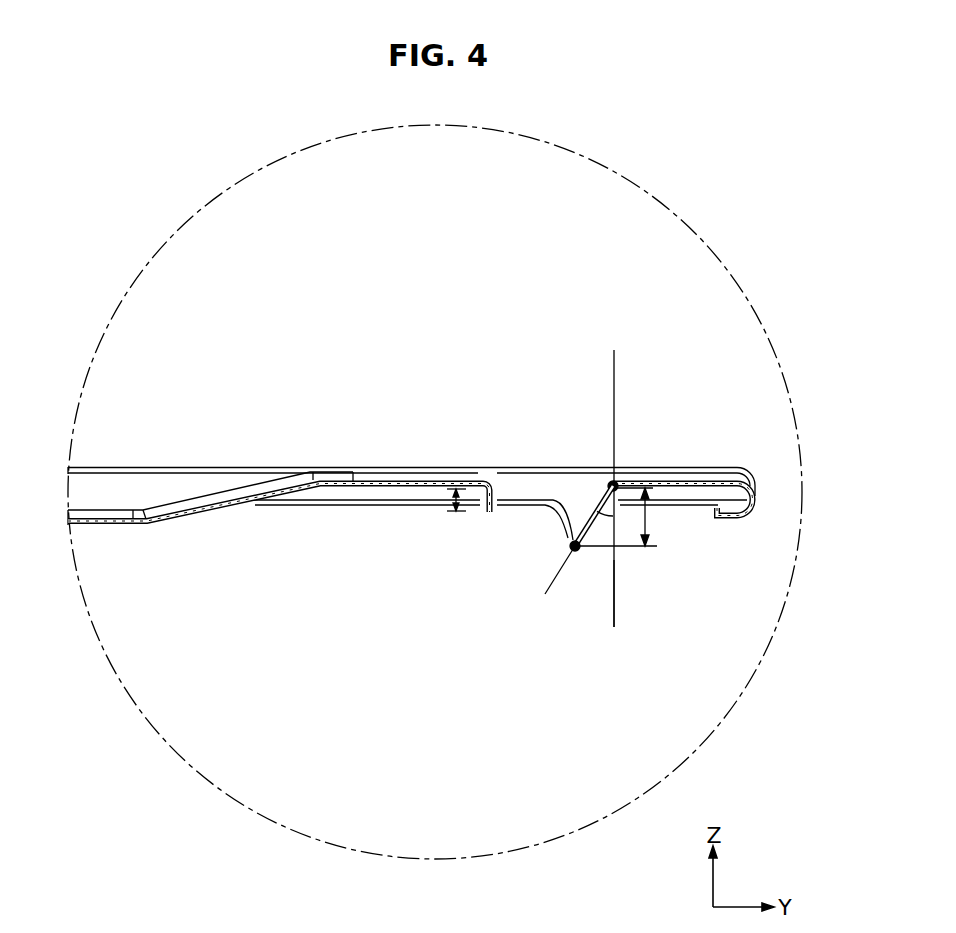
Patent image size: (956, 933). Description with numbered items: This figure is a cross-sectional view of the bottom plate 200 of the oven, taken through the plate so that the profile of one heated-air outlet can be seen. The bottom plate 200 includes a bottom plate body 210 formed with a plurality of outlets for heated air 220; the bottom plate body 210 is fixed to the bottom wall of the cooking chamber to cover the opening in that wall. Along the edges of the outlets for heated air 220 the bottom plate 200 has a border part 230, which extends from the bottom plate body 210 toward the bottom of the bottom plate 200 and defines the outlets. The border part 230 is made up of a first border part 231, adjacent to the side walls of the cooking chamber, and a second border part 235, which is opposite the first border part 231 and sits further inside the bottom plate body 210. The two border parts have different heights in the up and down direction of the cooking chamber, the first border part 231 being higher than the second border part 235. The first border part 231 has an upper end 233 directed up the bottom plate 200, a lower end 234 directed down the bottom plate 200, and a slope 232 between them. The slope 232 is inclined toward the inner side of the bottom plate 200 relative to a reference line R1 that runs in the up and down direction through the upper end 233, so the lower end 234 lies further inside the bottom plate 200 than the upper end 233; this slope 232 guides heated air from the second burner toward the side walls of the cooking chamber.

The bottom plate 200 is at (632, 413).
The bottom plate body 210 is at (232, 480).
The outlets for heated air 220 is at (545, 523).
The border part 230 is at (410, 518).
The first border part 231 is at (585, 530).
The slope 232 is at (600, 507).
The upper end 233 is at (620, 478).
The lower end 234 is at (570, 546).
The second border part 235 is at (477, 513).
The reference line R1 is at (617, 588).